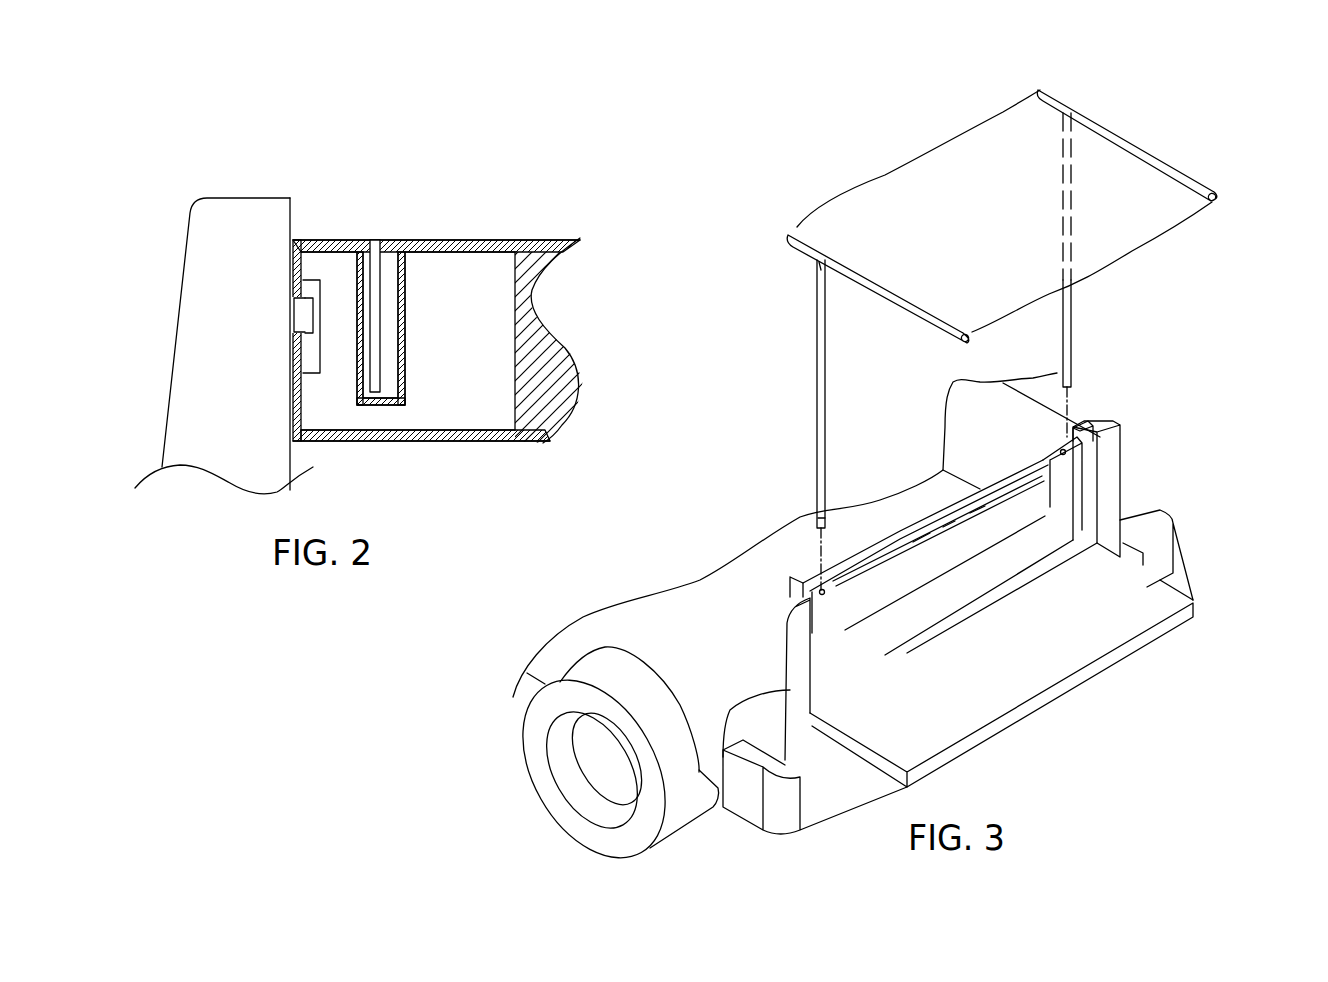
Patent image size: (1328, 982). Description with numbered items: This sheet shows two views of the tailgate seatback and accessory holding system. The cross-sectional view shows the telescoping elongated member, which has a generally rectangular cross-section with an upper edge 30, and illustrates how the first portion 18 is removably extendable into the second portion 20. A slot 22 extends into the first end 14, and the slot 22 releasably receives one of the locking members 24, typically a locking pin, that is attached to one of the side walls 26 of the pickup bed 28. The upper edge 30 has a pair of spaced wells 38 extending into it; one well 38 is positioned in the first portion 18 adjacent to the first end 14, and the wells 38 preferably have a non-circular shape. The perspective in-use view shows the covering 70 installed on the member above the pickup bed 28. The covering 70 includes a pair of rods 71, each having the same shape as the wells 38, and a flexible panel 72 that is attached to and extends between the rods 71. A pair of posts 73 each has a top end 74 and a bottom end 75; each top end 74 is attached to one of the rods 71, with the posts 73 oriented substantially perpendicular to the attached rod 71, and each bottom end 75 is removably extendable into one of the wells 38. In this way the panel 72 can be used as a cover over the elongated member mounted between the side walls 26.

In FIG. 3, the first end 14 is at (1088, 473).
In FIG. 3, the first portion 18 is at (1070, 487).
In FIG. 3, the second portion 20 is at (847, 597).
In FIG. 2, the slot 22 is at (302, 350).
In FIG. 2, the locking member 24 is at (310, 317).
In FIG. 3, the side wall 26 is at (727, 753).
In FIG. 3, the pickup bed 28 is at (950, 607).
In FIG. 2, the upper edge 30 is at (463, 242).
In FIG. 2, the well 38 is at (388, 262).
In FIG. 3, the covering 70 is at (1165, 130).
In FIG. 3, the rod 71 is at (797, 227).
In FIG. 3, the flexible panel 72 is at (940, 162).
In FIG. 3, the post 73 is at (818, 396).
In FIG. 3, the top end 74 is at (820, 273).
In FIG. 3, the bottom end 75 is at (823, 530).